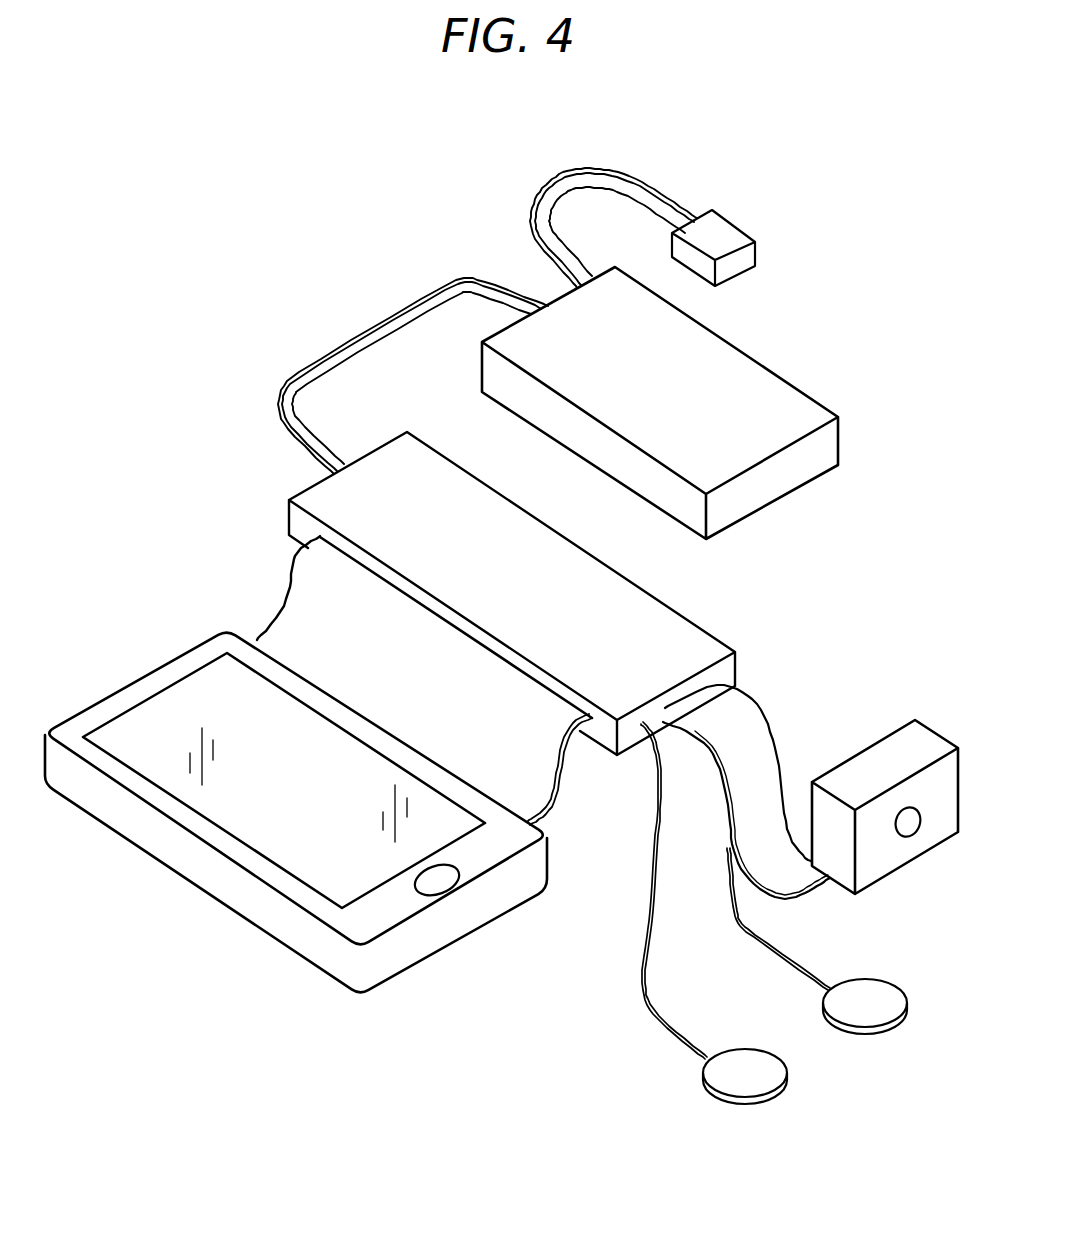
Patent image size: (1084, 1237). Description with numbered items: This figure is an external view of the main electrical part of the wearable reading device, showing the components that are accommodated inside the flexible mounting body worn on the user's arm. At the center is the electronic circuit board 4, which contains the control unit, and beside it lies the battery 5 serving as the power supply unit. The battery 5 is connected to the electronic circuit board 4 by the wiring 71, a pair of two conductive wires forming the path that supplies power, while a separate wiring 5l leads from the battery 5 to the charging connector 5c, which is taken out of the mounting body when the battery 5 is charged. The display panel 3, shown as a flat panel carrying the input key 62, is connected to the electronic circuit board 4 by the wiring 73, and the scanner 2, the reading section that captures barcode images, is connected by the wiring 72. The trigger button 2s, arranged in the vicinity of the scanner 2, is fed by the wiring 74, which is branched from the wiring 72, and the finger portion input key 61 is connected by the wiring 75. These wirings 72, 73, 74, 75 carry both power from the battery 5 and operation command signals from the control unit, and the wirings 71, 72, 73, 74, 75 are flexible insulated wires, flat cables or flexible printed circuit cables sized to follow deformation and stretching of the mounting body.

The scanner 2 is at (927, 740).
The trigger button 2s is at (875, 1013).
The display panel 3 is at (198, 697).
The electronic circuit board 4 is at (393, 467).
The battery 5 is at (773, 397).
The charging connector 5c is at (720, 240).
The power cable 5l is at (558, 185).
The finger portion input key 61 is at (753, 1082).
The input key 62 is at (440, 877).
The wiring 71 is at (388, 323).
The wiring 72 is at (768, 720).
The wiring 73 is at (310, 590).
The wiring 74 is at (805, 966).
The wiring 75 is at (677, 1040).